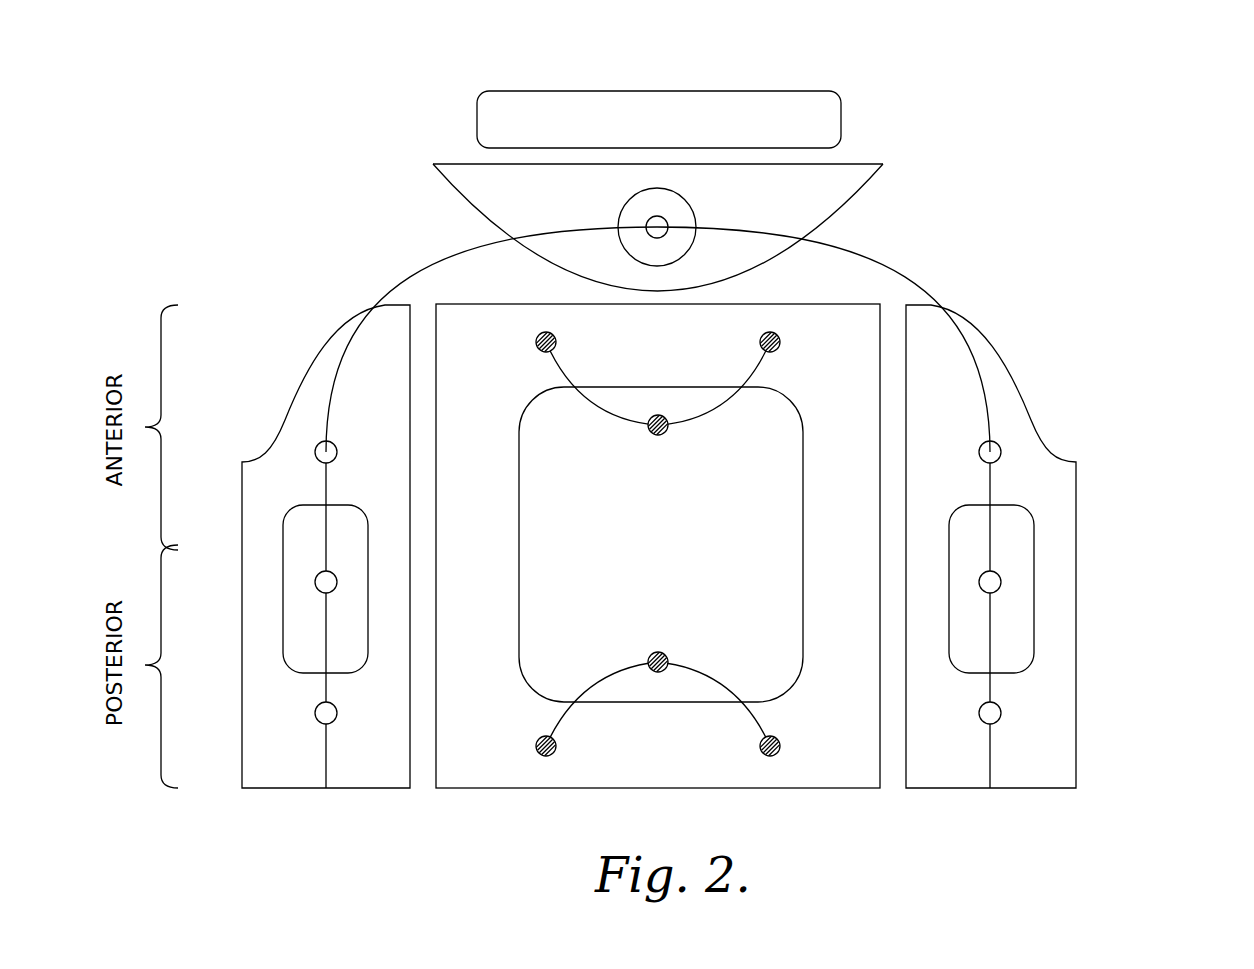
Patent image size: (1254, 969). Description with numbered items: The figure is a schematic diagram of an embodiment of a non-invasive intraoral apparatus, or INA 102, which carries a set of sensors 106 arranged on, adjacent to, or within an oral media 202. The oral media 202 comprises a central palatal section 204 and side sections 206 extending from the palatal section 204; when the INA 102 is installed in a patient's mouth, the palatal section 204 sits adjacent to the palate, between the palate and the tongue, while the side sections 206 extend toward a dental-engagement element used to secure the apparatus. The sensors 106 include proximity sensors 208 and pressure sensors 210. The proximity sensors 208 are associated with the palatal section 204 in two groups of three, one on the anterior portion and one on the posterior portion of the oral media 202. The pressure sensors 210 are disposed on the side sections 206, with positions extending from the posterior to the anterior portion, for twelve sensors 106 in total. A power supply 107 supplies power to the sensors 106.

The non-invasive intraoral apparatus (INA) 102 is at (1067, 165).
The power supply 107 is at (723, 112).
The oral media 202 is at (453, 270).
The central palatal section 204 is at (832, 765).
The side sections 206 is at (285, 780).
The sensors 106 is at (1017, 438).
The proximity sensors 208 is at (762, 342).
The pressure sensors 210 is at (318, 447).